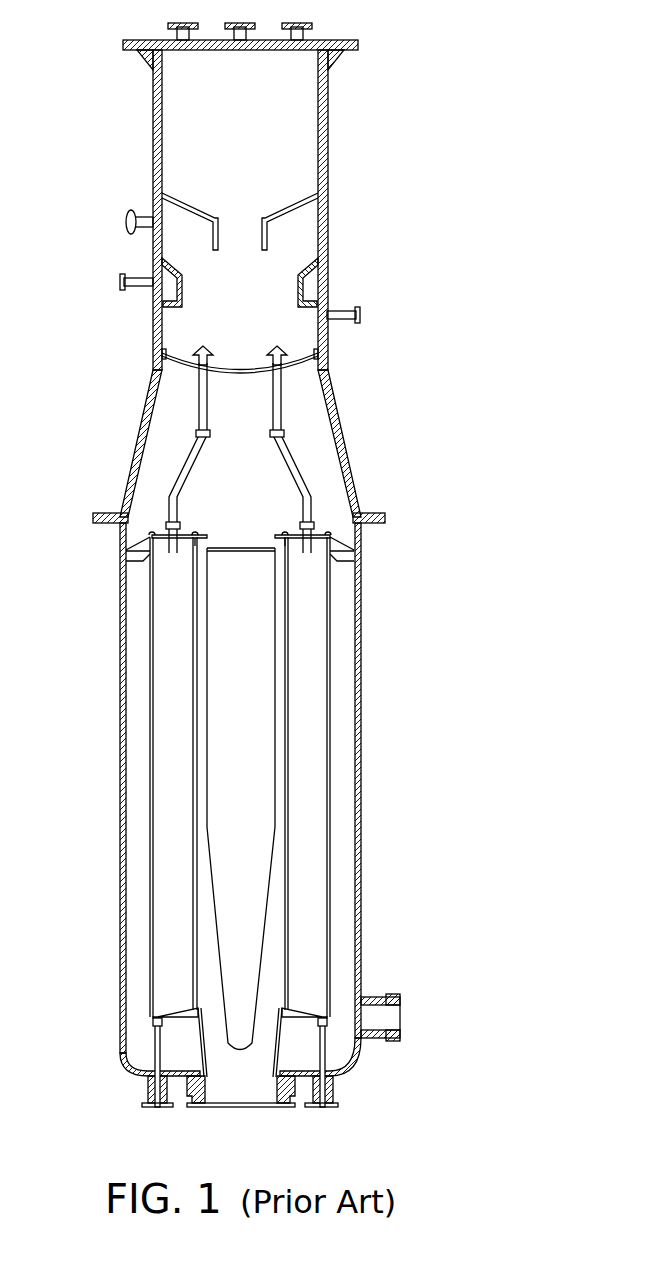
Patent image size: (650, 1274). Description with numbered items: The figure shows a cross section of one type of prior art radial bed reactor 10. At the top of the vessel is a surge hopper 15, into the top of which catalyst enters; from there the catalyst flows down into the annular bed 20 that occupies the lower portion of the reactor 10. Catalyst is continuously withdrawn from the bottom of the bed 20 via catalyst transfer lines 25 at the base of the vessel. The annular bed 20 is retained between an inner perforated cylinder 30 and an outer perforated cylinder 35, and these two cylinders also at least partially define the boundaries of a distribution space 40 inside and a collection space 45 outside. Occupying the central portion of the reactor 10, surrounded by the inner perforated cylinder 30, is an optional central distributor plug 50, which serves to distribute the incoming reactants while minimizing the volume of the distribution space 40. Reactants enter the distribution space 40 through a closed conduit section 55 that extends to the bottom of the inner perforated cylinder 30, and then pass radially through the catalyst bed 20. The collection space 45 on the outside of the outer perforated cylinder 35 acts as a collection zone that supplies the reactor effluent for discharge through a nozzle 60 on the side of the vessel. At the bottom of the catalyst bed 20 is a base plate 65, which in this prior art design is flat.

The radial bed reactor 10 is at (484, 59).
The surge hopper 15 is at (307, 118).
The annular bed 20 is at (313, 598).
The catalyst transfer lines 25 is at (327, 1055).
The inner perforated cylinder 30 is at (290, 629).
The outer perforated cylinder 35 is at (330, 667).
The distribution space 40 is at (205, 869).
The collection space 45 is at (342, 846).
The central distributor plug 50 is at (275, 806).
The closed conduit section 55 is at (203, 1057).
The nozzle 60 is at (375, 993).
The base plate 65 is at (175, 1012).